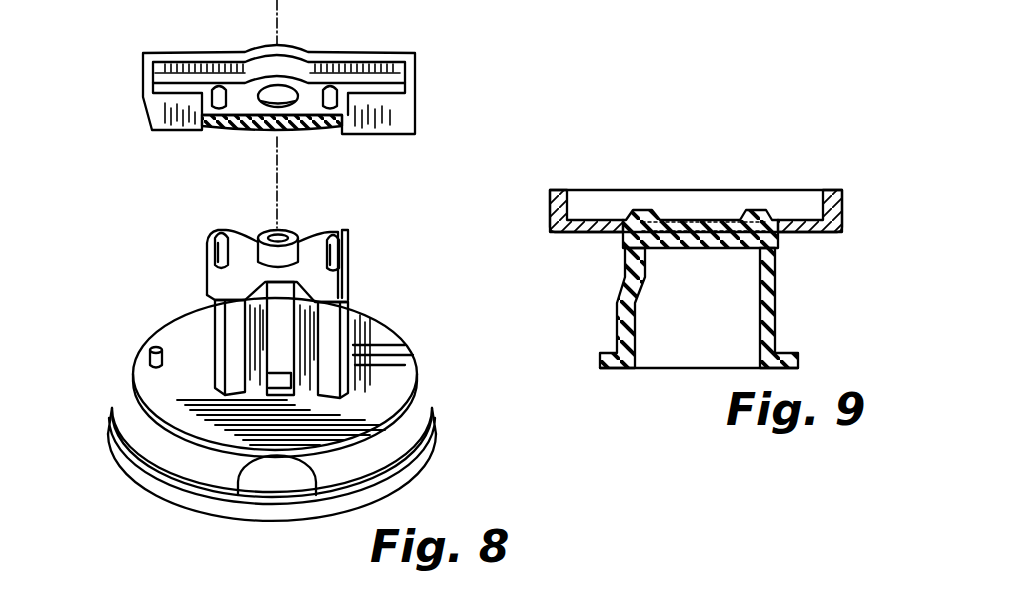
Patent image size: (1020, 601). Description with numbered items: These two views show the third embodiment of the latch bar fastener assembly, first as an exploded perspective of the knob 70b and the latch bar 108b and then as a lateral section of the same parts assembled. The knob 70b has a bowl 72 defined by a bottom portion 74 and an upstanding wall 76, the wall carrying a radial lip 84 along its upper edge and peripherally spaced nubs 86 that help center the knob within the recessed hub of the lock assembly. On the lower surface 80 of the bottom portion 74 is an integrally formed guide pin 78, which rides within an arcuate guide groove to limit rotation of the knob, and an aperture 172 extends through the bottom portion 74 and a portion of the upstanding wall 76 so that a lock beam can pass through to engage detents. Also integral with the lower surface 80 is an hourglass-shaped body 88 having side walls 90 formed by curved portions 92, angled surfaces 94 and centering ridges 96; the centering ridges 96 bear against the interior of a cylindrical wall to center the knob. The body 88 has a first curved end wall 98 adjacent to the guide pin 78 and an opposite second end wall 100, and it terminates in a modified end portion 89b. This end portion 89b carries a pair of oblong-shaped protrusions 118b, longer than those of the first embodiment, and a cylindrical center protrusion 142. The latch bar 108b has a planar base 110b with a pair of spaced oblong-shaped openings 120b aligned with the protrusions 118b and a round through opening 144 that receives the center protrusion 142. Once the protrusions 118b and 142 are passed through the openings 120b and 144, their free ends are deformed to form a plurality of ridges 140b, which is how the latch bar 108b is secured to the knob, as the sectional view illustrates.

In FIG. 8, the knob 70b is at (178, 312).
In FIG. 8, the bowl 72 is at (393, 316).
In FIG. 8, the bottom portion 74 is at (388, 380).
In FIG. 8, the upstanding wall 76 is at (176, 468).
In FIG. 8, the guide pin 78 is at (152, 357).
In FIG. 8, the lower surface 80 is at (345, 318).
In FIG. 8, the radial lip 84 is at (428, 462).
In FIG. 8, the nubs 86 is at (263, 483).
In FIG. 8, the hourglass-shaped body 88 is at (240, 231).
In FIG. 9, the hourglass-shaped body 88 is at (778, 285).
In FIG. 8, the end portion 89b is at (300, 248).
In FIG. 8, the side walls 90 is at (333, 262).
In FIG. 8, the curved portions 92 is at (290, 360).
In FIG. 8, the angled surfaces 94 is at (263, 370).
In FIG. 8, the centering ridges 96 is at (215, 371).
In FIG. 8, the first curved end wall 98 is at (210, 266).
In FIG. 8, the second end wall 100 is at (305, 298).
In FIG. 8, the latch bar 108b is at (416, 87).
In FIG. 9, the latch bar 108b is at (870, 157).
In FIG. 8, the planar base 110b is at (387, 85).
In FIG. 9, the planar base 110b is at (576, 213).
In FIG. 8, the oblong-shaped protrusions 118b is at (218, 236).
In FIG. 8, the oblong-shaped openings 120b is at (219, 82).
In FIG. 9, the ridges 140b is at (632, 217).
In FIG. 8, the cylindrical center protrusion 142 is at (285, 228).
In FIG. 8, the round through opening 144 is at (282, 88).
In FIG. 8, the aperture 172 is at (405, 360).